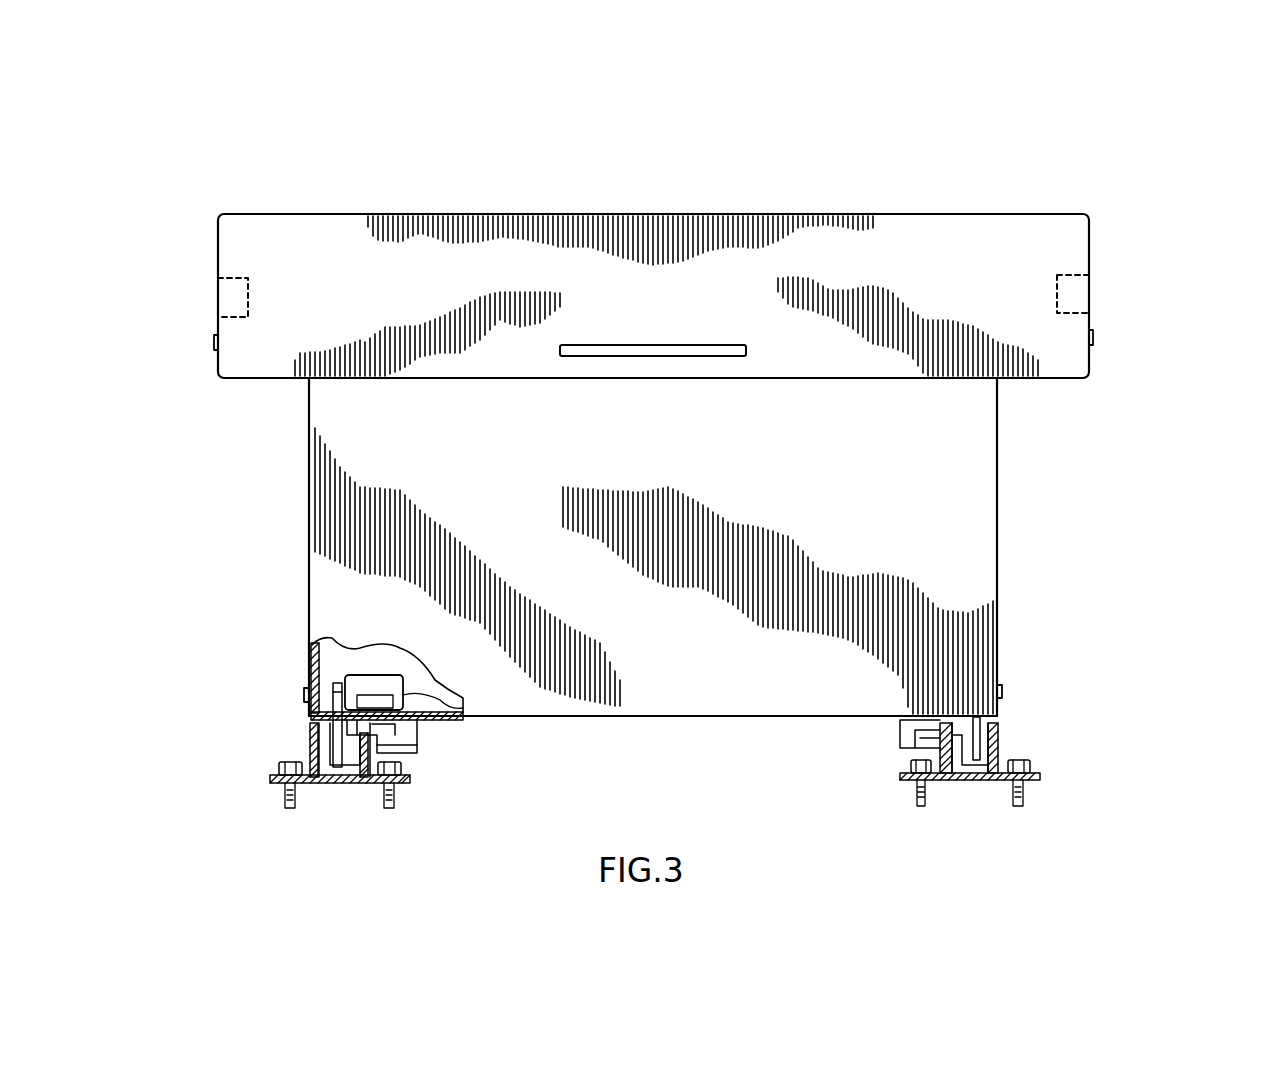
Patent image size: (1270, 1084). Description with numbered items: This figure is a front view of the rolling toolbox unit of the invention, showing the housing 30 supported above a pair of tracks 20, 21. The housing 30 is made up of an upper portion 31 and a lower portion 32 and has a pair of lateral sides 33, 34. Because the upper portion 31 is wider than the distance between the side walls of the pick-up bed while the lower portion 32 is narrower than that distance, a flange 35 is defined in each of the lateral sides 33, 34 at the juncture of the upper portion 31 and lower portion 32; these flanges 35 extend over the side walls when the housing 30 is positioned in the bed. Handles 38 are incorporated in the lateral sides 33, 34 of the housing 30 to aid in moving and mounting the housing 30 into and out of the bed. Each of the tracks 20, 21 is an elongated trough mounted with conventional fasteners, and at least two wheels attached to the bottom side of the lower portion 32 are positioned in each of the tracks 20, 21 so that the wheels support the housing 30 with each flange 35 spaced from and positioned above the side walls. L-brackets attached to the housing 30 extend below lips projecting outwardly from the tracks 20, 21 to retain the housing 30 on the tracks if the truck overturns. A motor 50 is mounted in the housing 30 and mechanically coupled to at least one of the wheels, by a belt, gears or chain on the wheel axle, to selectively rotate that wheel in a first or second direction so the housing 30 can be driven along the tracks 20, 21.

The housing 30 is at (1094, 180).
The upper portion 31 is at (1092, 378).
The lower portion 32 is at (1002, 706).
The lateral side 33 is at (308, 512).
The lateral side 34 is at (1000, 575).
The flange 35 is at (248, 380).
The handle 38 is at (232, 280).
The track 20 is at (312, 743).
The track 21 is at (1002, 742).
The motor 50 is at (380, 668).